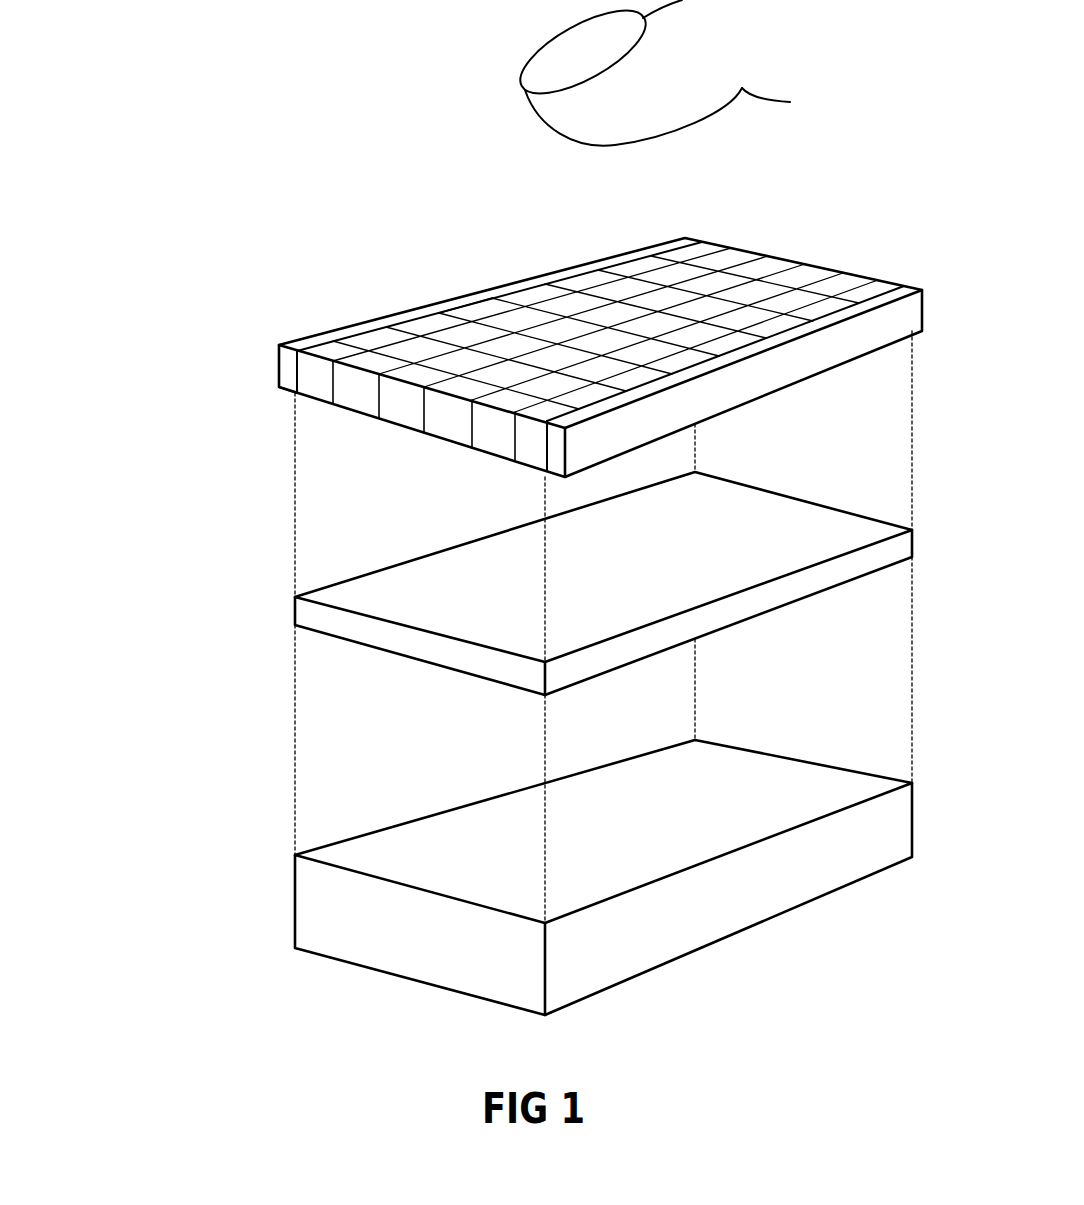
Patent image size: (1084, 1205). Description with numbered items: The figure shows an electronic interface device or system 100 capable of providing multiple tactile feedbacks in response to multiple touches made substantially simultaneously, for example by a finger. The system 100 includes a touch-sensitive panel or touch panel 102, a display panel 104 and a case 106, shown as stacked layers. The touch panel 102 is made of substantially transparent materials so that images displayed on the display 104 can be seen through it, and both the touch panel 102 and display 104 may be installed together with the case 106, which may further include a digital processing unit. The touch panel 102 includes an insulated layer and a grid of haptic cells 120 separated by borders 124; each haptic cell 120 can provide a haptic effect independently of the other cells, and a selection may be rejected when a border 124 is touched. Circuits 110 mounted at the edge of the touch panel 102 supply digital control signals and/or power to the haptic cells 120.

The electronic interface device or system 100 is at (347, 170).
The touch-sensitive panel 102 is at (502, 353).
The display panel 104 is at (375, 635).
The case 106 is at (335, 912).
The circuits 110 is at (280, 372).
The haptic cells 120 is at (415, 355).
The borders 124 is at (458, 325).